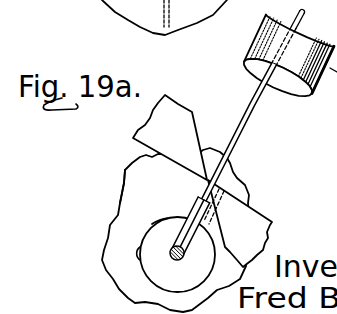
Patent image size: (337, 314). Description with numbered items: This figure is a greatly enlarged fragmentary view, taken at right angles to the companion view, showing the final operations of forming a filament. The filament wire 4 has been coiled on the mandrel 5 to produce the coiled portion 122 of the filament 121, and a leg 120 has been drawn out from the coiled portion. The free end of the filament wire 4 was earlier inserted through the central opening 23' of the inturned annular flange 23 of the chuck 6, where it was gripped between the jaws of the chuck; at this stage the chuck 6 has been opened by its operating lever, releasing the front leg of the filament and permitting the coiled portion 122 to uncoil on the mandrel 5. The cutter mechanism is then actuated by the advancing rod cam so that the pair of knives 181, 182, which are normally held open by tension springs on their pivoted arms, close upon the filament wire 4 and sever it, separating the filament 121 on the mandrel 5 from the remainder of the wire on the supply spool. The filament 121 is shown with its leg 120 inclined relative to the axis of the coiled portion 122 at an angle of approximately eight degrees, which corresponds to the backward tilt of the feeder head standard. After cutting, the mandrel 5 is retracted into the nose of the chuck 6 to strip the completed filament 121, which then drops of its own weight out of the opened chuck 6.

The filament wire 4 is at (249, 115).
The mandrel 5 is at (184, 257).
The chuck 6 is at (102, 238).
The inturned annular flange 23 is at (115, 180).
The central opening 23' is at (110, 270).
The leg 120 is at (207, 240).
The filament 121 is at (165, 226).
The coiled portion 122 is at (173, 261).
The knife 181 is at (270, 216).
The knife 182 is at (178, 108).